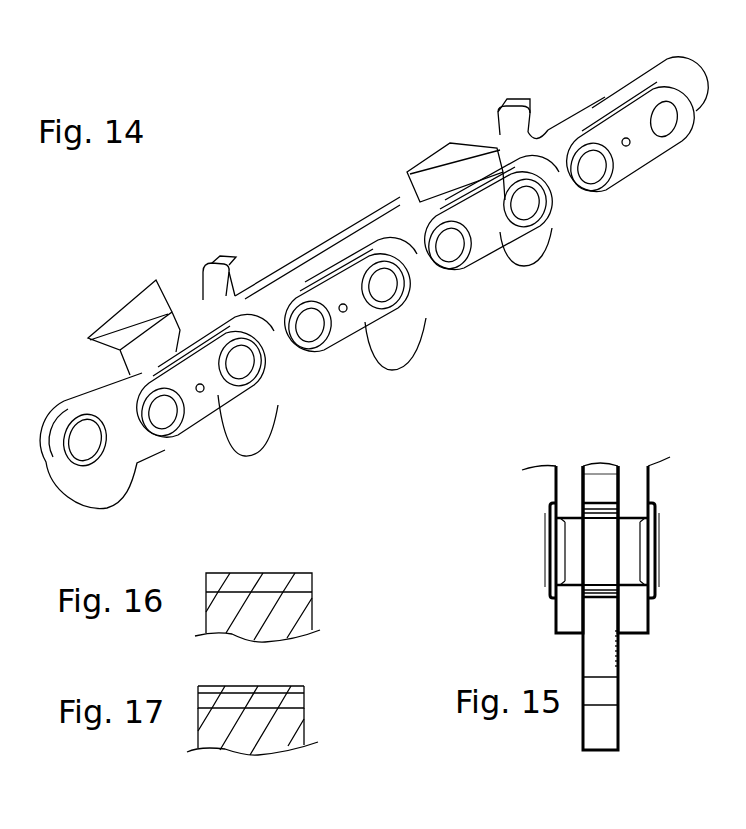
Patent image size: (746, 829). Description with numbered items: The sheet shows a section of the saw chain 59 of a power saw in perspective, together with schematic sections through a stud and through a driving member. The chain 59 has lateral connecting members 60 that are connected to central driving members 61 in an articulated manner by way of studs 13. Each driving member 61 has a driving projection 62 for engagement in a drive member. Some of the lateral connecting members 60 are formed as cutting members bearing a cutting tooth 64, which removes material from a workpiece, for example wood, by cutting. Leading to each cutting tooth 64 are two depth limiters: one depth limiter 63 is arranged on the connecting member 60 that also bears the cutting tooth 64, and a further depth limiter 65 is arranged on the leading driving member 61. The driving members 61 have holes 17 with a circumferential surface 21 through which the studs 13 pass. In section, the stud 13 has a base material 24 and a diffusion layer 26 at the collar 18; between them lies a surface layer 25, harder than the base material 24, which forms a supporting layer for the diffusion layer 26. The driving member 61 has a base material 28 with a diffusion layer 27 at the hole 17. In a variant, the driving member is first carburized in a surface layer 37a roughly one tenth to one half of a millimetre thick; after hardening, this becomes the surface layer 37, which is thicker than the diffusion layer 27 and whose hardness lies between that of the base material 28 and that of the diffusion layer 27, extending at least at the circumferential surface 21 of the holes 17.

In FIG. 14, the stud 13 is at (310, 335).
In FIG. 15, the stud 13 is at (550, 548).
In FIG. 14, the hole 17 is at (83, 430).
In FIG. 15, the collar 18 is at (625, 570).
In FIG. 14, the circumferential surface 21 is at (90, 453).
In FIG. 15, the base material 24 is at (608, 528).
In FIG. 15, the surface layer 25 is at (608, 512).
In FIG. 15, the diffusion layer 26 is at (608, 508).
In FIG. 15, the diffusion layer 27 is at (597, 500).
In FIG. 17, the diffusion layer 27 is at (297, 687).
In FIG. 15, the base material 28 is at (606, 478).
In FIG. 16, the base material 28 is at (300, 615).
In FIG. 17, the base material 28 is at (290, 730).
In FIG. 17, the surface layer 37 is at (297, 699).
In FIG. 16, the surface layer 37a is at (303, 585).
In FIG. 14, the chain 59 is at (115, 233).
In FIG. 14, the lateral connecting member 60 is at (628, 77).
In FIG. 15, the lateral connecting member 60 is at (638, 480).
In FIG. 14, the driving member 61 is at (270, 307).
In FIG. 15, the driving member 61 is at (602, 647).
In FIG. 14, the driving projection 62 is at (252, 418).
In FIG. 14, the depth limiter 63 is at (213, 260).
In FIG. 14, the cutting tooth 64 is at (160, 297).
In FIG. 14, the depth limiter 65 is at (513, 110).